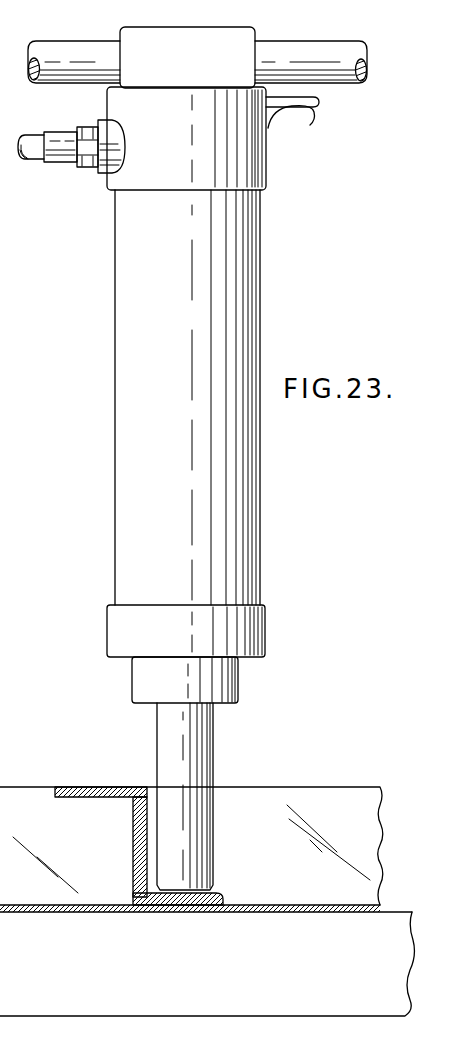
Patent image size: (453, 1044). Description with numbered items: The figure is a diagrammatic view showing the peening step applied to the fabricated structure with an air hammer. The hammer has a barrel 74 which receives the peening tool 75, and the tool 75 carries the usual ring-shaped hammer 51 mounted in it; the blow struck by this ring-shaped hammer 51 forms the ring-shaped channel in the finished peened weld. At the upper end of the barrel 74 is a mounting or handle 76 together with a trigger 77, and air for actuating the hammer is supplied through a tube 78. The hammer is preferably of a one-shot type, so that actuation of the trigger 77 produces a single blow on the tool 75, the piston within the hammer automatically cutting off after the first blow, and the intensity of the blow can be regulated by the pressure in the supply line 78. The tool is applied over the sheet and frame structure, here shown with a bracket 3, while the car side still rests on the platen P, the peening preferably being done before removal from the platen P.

The mounting or handle 76 is at (86, 15).
The trigger 77 is at (310, 125).
The tube 78 is at (38, 163).
The barrel 74 is at (260, 496).
The tool 75 is at (240, 687).
The bracket 3 is at (133, 822).
The ring-shaped hammer 51 is at (219, 892).
The platen P is at (38, 1000).